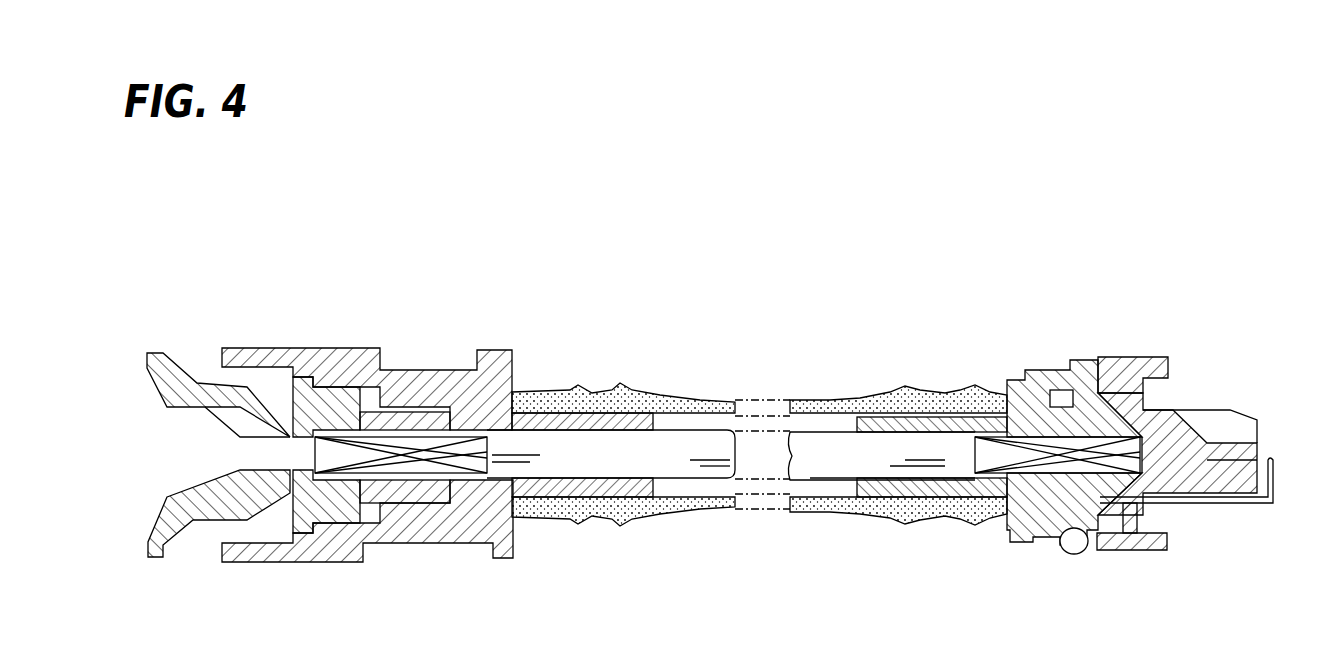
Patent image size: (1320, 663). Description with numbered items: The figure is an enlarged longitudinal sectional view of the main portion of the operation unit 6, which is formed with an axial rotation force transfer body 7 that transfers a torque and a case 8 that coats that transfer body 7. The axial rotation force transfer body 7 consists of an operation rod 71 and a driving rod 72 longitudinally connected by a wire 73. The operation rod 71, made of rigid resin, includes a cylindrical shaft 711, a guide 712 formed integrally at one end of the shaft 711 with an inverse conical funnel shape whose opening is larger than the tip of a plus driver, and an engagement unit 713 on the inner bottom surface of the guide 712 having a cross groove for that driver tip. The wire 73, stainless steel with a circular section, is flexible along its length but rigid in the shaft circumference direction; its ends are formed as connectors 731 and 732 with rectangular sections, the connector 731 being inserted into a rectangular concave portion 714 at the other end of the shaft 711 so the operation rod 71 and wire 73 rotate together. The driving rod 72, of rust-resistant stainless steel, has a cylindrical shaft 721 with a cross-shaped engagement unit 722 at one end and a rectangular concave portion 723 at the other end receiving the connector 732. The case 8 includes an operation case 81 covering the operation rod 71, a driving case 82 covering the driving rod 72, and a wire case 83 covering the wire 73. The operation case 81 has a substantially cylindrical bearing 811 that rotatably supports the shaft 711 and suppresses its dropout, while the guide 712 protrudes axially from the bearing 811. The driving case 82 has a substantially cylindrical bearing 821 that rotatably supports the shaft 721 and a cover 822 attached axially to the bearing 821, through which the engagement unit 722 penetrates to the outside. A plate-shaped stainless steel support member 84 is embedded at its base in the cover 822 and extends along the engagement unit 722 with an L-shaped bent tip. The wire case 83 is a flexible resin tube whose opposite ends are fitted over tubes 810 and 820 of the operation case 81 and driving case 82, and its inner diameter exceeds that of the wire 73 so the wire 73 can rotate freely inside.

The operation unit 6 is at (757, 282).
The axial rotation force transfer body 7 is at (735, 512).
The case 8 is at (759, 434).
The operation rod 71 is at (246, 442).
The driving rod 72 is at (1177, 407).
The wire 73 is at (727, 521).
The operation case 81 is at (378, 442).
The driving case 82 is at (1058, 442).
The wire case 83 is at (800, 401).
The support member 84 is at (1248, 503).
The shaft 711 is at (389, 455).
The guide 712 is at (170, 543).
The engagement unit 713 is at (238, 423).
The rectangular concave portion 714 is at (376, 488).
The shaft 721 is at (1090, 490).
The engagement unit 722 is at (1223, 430).
The rectangular concave portion 723 is at (1103, 478).
The connector 731 is at (420, 478).
The connector 732 is at (1023, 457).
The tube 810 is at (591, 498).
The bearing 811 is at (512, 540).
The tube 820 is at (920, 500).
The bearing 821 is at (1007, 390).
The cover 822 is at (1133, 395).